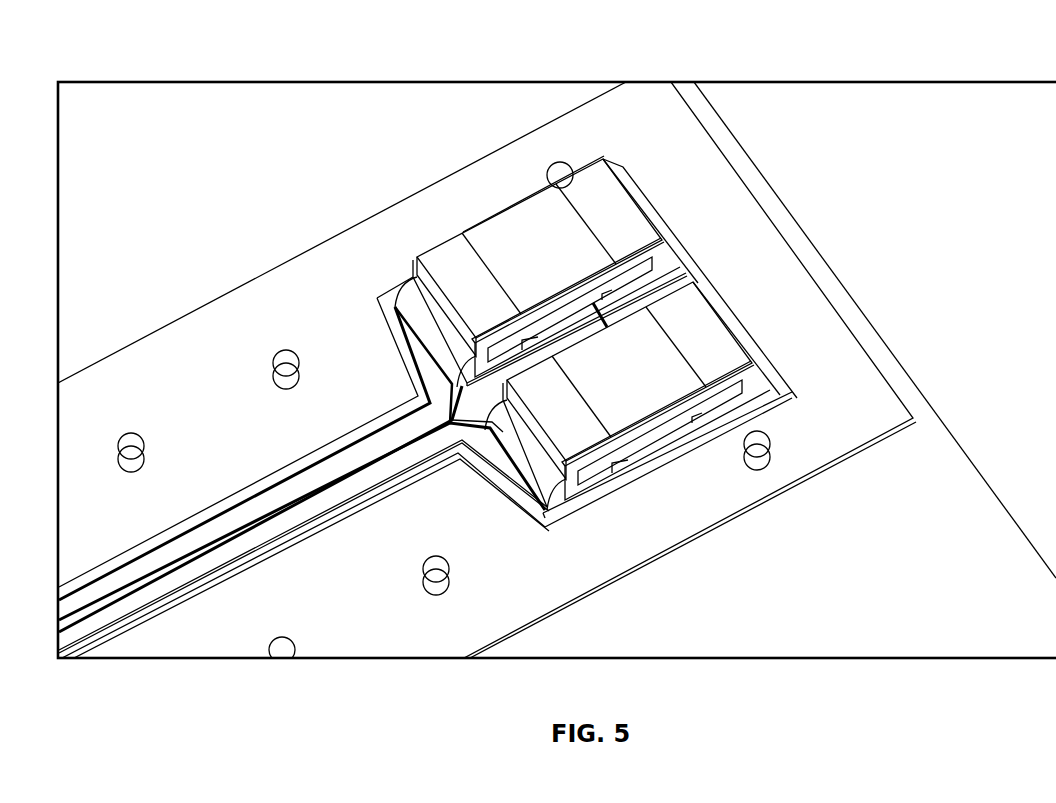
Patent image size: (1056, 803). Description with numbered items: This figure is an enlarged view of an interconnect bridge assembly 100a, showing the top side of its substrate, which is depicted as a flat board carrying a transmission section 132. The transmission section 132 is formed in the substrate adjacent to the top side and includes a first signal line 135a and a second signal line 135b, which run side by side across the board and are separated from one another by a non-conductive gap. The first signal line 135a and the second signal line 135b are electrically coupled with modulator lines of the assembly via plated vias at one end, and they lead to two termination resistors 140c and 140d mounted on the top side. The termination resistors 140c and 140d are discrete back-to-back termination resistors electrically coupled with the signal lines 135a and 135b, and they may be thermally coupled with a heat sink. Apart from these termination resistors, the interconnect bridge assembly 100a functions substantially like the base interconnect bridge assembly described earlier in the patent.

The interconnect bridge assembly 100a is at (385, 205).
The transmission section 132 is at (210, 507).
The first signal line 135a is at (383, 437).
The second signal line 135b is at (305, 513).
The termination resistor 140c is at (621, 206).
The termination resistor 140d is at (735, 338).